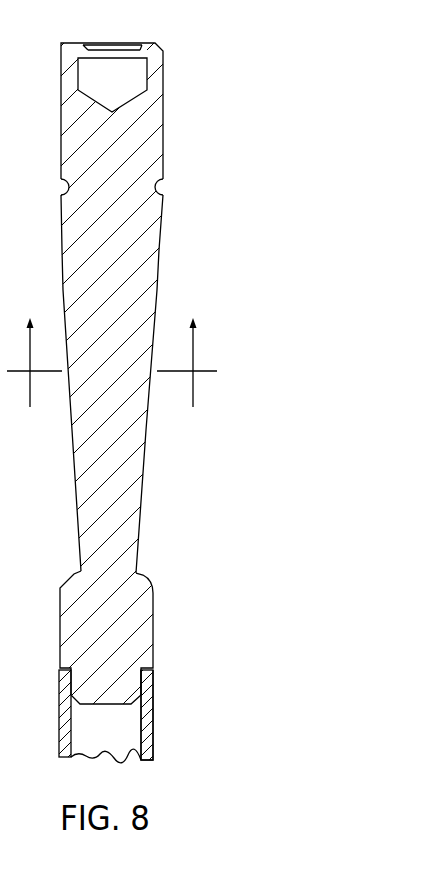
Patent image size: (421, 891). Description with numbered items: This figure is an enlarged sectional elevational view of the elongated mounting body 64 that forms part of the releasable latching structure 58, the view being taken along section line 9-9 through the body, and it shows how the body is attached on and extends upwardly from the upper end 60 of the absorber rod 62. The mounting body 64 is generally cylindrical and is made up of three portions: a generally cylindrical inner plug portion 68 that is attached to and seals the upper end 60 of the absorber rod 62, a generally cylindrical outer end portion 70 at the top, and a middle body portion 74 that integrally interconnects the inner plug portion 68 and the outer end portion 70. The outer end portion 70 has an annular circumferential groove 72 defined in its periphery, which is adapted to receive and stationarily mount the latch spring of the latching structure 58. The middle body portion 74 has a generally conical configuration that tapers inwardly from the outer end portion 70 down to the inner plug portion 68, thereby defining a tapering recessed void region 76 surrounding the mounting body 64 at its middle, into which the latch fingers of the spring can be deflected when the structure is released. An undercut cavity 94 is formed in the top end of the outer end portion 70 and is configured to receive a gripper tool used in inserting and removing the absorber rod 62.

The releasable latching structure 58 is at (199, 136).
The outer end portion 70 is at (141, 120).
The undercut cavity 94 is at (126, 96).
The annular circumferential groove 72 is at (155, 187).
The mounting body 64 is at (168, 215).
The middle body portion 74 is at (122, 433).
The tapering recessed void region 76 is at (68, 517).
The inner plug portion 68 is at (141, 634).
The upper end 60 is at (153, 680).
The absorber rod 62 is at (156, 753).
The section line 9- 9 is at (112, 362).